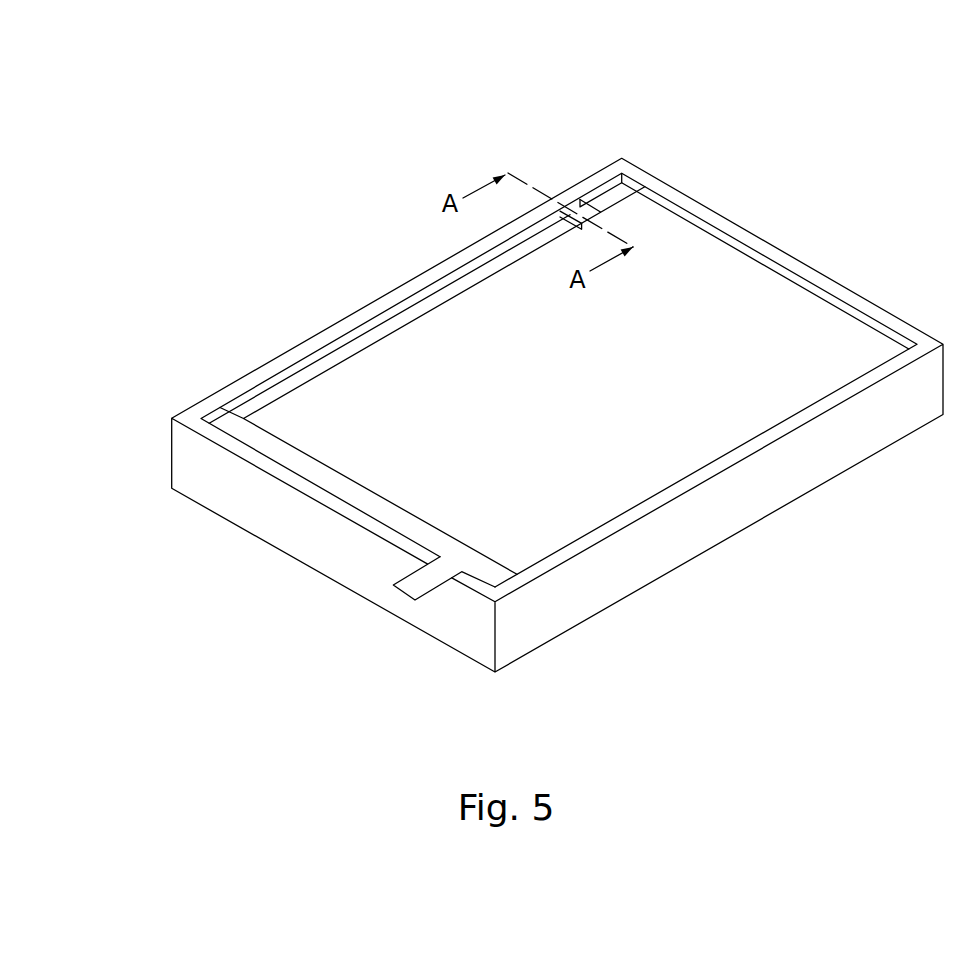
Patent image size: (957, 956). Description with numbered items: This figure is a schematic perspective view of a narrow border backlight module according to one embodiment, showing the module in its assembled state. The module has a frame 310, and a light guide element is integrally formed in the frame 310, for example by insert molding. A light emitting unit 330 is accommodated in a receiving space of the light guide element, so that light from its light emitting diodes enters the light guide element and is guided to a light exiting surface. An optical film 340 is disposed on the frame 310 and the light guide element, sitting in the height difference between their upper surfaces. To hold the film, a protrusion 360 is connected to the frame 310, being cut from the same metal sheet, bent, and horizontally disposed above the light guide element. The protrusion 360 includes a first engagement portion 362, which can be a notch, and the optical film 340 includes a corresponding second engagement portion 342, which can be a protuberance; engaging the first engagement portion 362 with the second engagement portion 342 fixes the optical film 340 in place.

The frame 310 is at (778, 247).
The light emitting unit 330 is at (487, 573).
The optical film 340 is at (668, 448).
The second engagement portion 342 is at (597, 223).
The protrusion 360 is at (593, 207).
The first engagement portion 362 is at (562, 187).